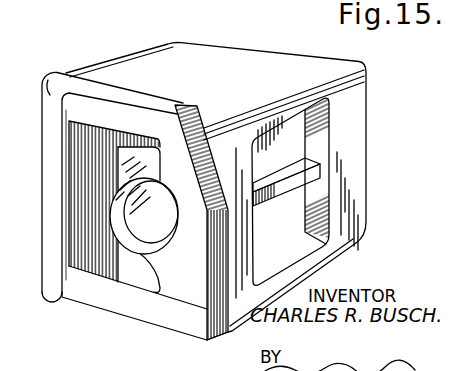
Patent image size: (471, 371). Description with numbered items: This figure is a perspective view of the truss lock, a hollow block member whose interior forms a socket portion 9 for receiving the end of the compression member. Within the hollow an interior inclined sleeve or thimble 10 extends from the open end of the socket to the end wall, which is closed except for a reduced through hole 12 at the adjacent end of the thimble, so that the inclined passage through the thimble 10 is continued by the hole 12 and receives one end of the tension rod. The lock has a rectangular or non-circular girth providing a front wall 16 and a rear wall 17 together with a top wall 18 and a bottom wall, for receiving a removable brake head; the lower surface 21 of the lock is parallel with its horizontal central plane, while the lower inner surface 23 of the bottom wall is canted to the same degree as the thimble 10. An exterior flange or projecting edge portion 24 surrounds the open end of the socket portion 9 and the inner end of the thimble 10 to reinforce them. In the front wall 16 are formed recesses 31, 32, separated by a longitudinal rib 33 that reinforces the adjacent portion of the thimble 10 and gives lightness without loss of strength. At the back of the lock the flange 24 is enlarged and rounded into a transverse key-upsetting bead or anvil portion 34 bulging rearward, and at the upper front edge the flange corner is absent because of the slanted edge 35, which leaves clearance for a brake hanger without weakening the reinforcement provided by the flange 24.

The socket portion 9 is at (80, 145).
The thimble 10 is at (128, 237).
The through hole 12 is at (155, 212).
The front wall 16 is at (355, 113).
The rear wall 17 is at (80, 226).
The top wall 18 is at (240, 62).
The lower surface 21 is at (241, 25).
The lower inner surface 23 is at (128, 273).
The flange 24 is at (150, 103).
The recess 31 is at (298, 116).
The recess 32 is at (283, 233).
The longitudinal rib 33 is at (303, 182).
The key-upsetting bead 34 is at (50, 88).
The slanted edge 35 is at (202, 128).